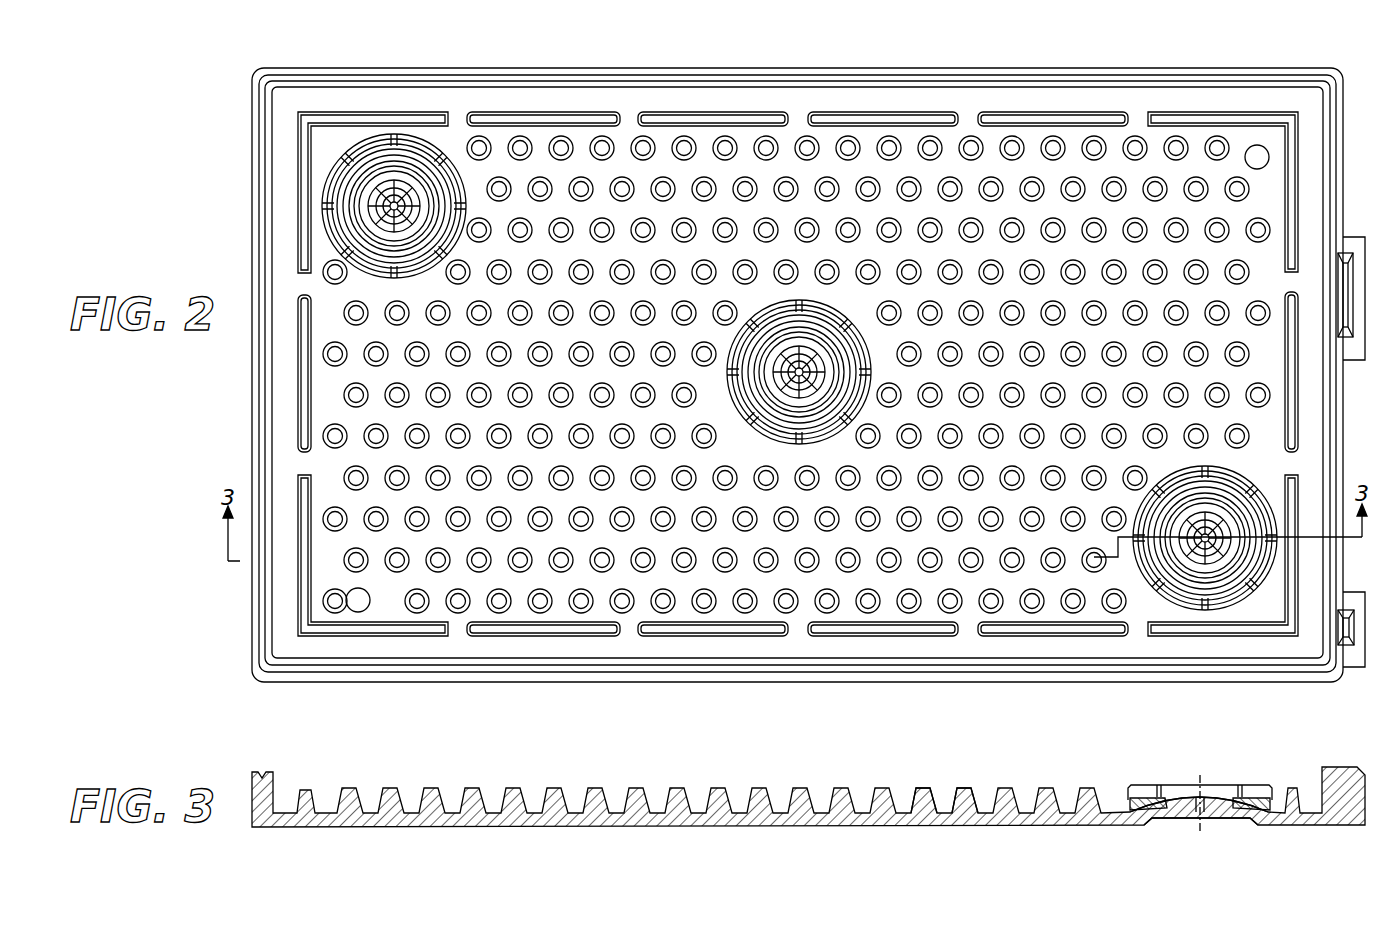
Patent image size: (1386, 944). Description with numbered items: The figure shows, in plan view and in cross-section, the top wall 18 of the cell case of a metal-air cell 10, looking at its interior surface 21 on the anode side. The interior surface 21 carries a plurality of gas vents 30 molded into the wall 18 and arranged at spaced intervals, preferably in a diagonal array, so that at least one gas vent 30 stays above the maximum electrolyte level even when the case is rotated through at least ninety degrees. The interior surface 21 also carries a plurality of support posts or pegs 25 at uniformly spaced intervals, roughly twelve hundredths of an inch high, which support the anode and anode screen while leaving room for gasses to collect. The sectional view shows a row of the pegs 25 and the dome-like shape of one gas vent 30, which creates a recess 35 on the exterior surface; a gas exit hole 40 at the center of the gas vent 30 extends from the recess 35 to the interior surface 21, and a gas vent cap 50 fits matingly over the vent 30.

In FIG. 2, the metal-air cell 10 is at (226, 177).
In FIG. 2, the top wall 18 is at (1256, 68).
In FIG. 3, the top wall 18 is at (712, 830).
In FIG. 2, the interior surface 21 is at (1268, 197).
In FIG. 2, the pegs 25 is at (644, 136).
In FIG. 3, the pegs 25 is at (968, 788).
In FIG. 2, the gas vent 30 is at (437, 160).
In FIG. 3, the gas vent 30 is at (1186, 829).
In FIG. 3, the recess 35 is at (1226, 822).
In FIG. 3, the gas exit hole 40 is at (1204, 814).
In FIG. 3, the gas vent cap 50 is at (1214, 786).